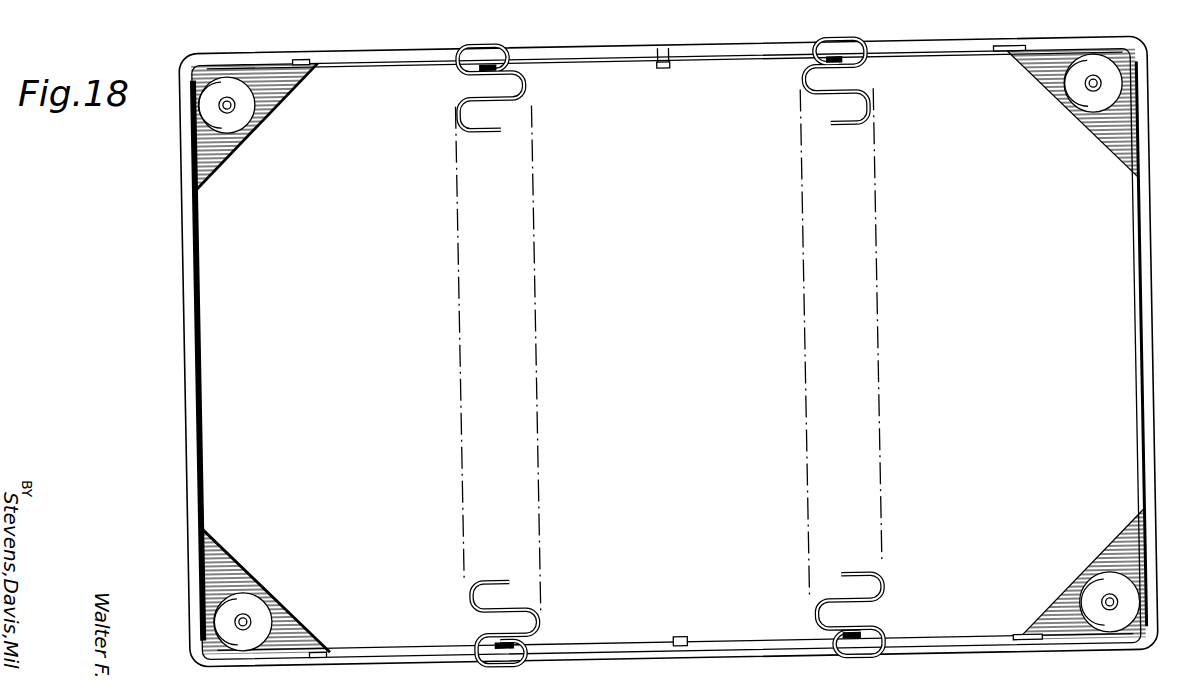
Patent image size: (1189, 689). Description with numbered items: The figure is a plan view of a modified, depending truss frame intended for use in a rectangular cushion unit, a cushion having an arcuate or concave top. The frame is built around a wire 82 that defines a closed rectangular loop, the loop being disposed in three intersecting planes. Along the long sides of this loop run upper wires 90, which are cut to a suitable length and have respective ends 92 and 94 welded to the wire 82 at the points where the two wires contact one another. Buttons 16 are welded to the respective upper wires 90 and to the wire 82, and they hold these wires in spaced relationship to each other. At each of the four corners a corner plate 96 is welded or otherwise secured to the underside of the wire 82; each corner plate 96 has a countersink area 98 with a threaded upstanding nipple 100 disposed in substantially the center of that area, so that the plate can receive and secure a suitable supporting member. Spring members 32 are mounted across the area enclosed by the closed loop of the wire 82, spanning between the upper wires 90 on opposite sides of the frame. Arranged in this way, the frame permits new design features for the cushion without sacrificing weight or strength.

The button 16 is at (669, 66).
The spring member 32 is at (538, 620).
The wire 82 is at (190, 330).
The upper wire 90 is at (648, 52).
The end 92 is at (314, 63).
The end 94 is at (1018, 56).
The corner plate 96 is at (1057, 87).
The countersink area 98 is at (1095, 106).
The threaded upstanding nipple 100 is at (1101, 85).